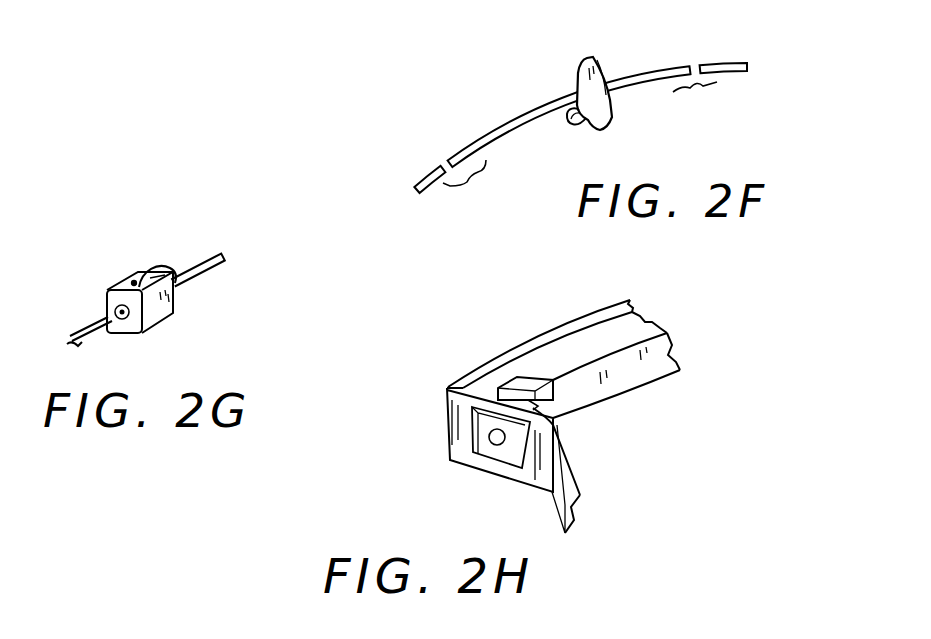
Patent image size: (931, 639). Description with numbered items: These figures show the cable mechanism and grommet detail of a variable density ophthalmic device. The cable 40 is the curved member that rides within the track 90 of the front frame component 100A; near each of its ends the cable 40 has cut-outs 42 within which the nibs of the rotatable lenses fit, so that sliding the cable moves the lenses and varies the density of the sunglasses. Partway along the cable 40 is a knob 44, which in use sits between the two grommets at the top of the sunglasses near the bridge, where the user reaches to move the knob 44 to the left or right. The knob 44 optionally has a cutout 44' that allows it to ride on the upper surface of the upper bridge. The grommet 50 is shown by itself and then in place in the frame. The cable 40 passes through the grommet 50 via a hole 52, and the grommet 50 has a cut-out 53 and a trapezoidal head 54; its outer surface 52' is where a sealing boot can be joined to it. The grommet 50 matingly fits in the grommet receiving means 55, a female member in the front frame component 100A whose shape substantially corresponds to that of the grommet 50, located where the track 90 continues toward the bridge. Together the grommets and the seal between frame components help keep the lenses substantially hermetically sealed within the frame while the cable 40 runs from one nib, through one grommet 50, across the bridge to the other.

In FIG. 2F, the cable 40 is at (705, 66).
In FIG. 2G, the cable 40 is at (190, 262).
In FIG. 2F, the cut-outs 42 is at (427, 175).
In FIG. 2F, the knob 44 is at (565, 81).
In FIG. 2F, the cutout 44' is at (599, 137).
In FIG. 2G, the grommet 50 is at (148, 334).
In FIG. 2H, the grommet 50 is at (480, 422).
In FIG. 2G, the hole 52 is at (87, 312).
In FIG. 2H, the hole 52 is at (492, 491).
In FIG. 2H, the outer surface 52' is at (440, 483).
In FIG. 2G, the cut-out 53 is at (135, 284).
In FIG. 2H, the cut-out 53 is at (533, 405).
In FIG. 2G, the trapezoidal head 54 is at (140, 276).
In FIG. 2H, the trapezoidal head 54 is at (518, 378).
In FIG. 2H, the grommet receiving means 55 is at (488, 392).
In FIG. 2H, the track 90 is at (650, 330).
In FIG. 2H, the front frame component 100A is at (447, 450).